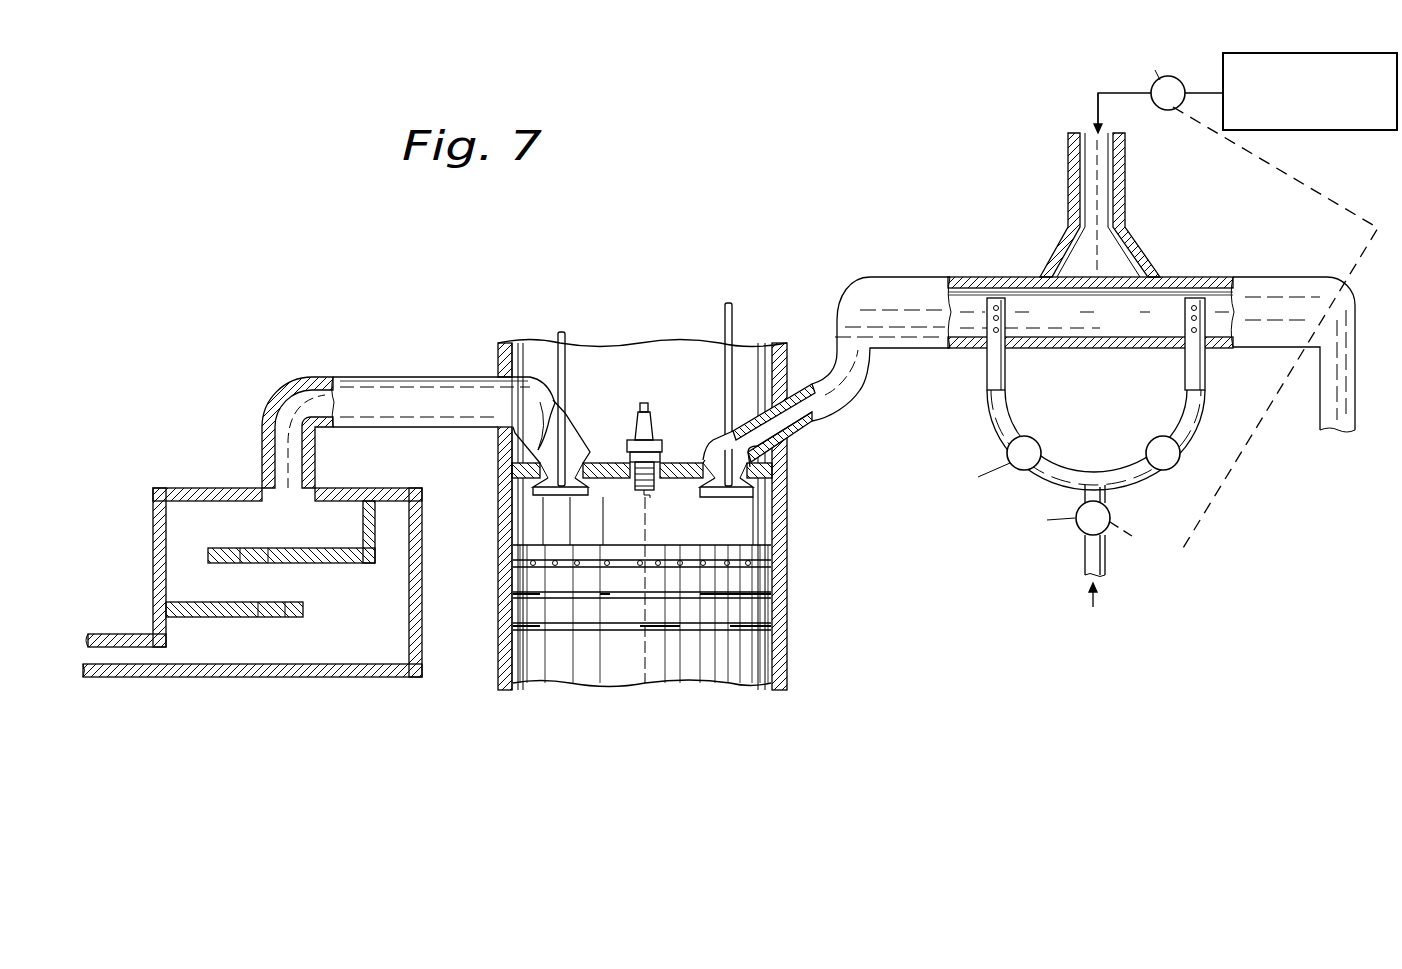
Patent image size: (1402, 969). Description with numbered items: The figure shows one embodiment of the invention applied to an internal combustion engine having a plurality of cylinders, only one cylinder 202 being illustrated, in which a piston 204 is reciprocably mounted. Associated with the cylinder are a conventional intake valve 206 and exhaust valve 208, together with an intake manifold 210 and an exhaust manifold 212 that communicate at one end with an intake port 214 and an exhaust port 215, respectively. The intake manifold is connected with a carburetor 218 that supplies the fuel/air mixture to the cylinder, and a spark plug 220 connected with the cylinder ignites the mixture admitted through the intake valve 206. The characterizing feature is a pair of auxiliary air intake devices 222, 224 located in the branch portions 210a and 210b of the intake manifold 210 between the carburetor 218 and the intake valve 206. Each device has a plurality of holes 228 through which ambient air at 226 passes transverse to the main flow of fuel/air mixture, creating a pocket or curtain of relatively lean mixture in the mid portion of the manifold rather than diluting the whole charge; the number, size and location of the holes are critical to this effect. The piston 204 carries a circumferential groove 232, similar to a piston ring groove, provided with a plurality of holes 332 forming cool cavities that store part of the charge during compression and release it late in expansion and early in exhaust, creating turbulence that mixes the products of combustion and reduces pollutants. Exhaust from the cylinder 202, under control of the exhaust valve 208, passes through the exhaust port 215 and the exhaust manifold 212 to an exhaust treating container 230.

The cylinder 202 is at (788, 577).
The piston 204 is at (630, 670).
The intake valve 206 is at (727, 497).
The exhaust valve 208 is at (562, 497).
The intake manifold 210 is at (937, 338).
The branch portion of the intake manifold 210a is at (910, 277).
The branch portion of the intake manifold 210b is at (1243, 278).
The exhaust manifold 212 is at (398, 387).
The intake port 214 is at (803, 413).
The exhaust port 215 is at (540, 440).
The carburetor 218 is at (1308, 62).
The spark plug 220 is at (645, 400).
The auxiliary air intake device 222 is at (1003, 382).
The auxiliary air intake device 224 is at (1193, 378).
The ambient air 226 is at (1105, 542).
The holes 228 is at (1197, 330).
The exhaust treating container 230 is at (313, 681).
The circumferential groove 232 is at (642, 552).
The holes 332 is at (641, 578).